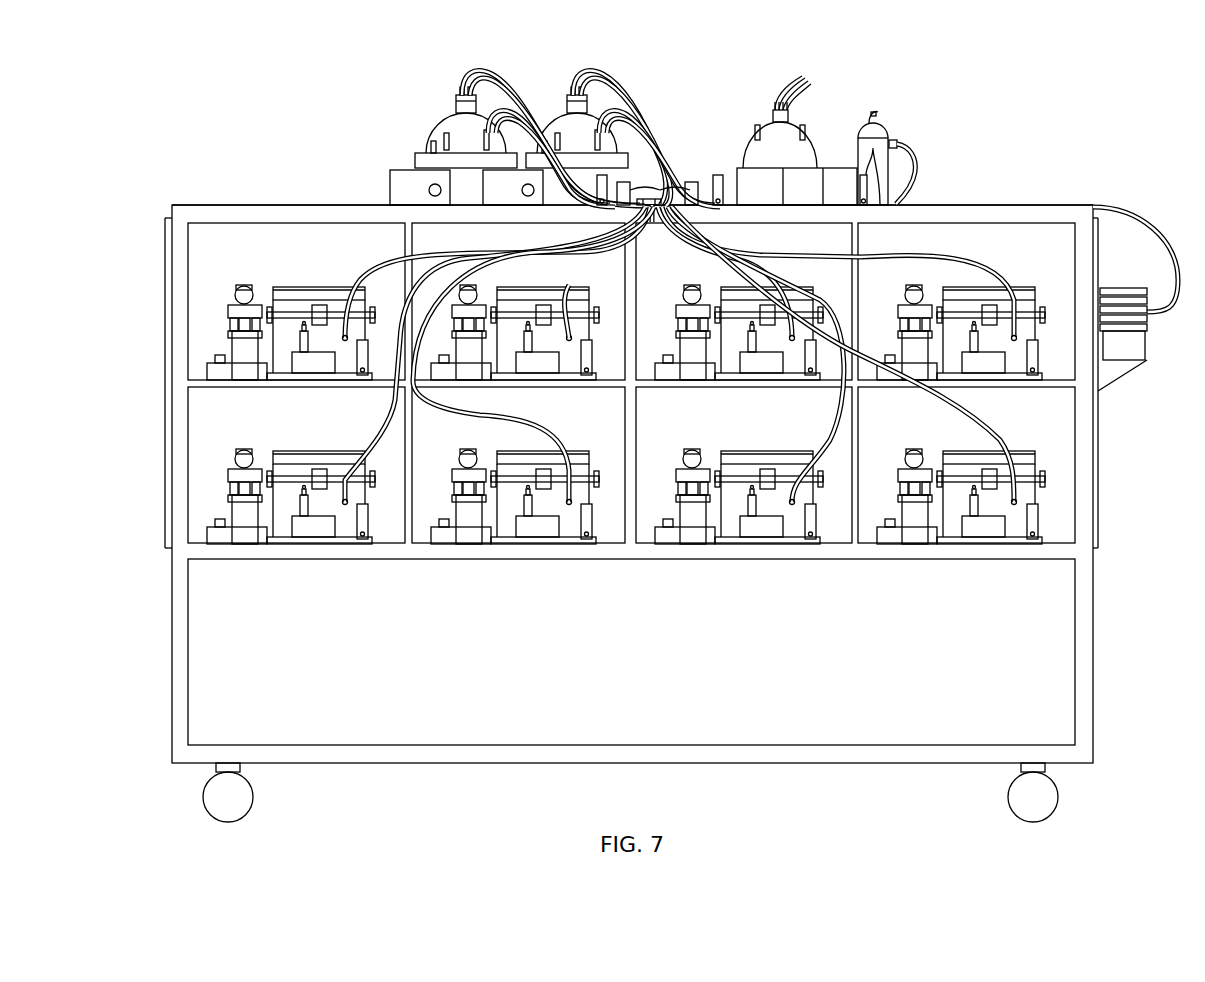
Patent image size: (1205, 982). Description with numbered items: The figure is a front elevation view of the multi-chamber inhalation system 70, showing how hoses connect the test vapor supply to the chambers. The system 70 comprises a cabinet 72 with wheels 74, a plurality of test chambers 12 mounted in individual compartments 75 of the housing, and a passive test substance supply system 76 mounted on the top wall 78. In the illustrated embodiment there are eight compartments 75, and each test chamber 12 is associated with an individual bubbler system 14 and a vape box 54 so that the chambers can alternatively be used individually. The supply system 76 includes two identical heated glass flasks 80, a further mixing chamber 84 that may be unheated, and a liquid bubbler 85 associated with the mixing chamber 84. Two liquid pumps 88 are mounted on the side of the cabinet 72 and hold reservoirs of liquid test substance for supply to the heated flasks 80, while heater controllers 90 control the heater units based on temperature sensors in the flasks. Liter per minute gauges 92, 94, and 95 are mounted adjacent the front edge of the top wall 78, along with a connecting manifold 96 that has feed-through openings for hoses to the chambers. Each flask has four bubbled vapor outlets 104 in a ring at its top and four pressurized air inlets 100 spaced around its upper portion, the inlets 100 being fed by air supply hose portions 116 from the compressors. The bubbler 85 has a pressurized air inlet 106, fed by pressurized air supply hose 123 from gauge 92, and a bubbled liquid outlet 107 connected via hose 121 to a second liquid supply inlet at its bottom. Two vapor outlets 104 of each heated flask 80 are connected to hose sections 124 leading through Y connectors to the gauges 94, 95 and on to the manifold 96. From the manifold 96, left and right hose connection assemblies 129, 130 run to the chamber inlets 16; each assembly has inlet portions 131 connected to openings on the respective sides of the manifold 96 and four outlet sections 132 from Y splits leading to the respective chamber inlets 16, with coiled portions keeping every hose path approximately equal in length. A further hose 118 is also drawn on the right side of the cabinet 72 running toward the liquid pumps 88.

The test chamber 12 is at (290, 284).
The bubbler system 14 is at (224, 334).
The chamber inlet 16 is at (362, 375).
The vape box 54 is at (318, 360).
The multi-chamber inhalation system 70 is at (1112, 418).
The cabinet 72 is at (1086, 614).
The wheels 74 is at (238, 800).
The compartment 75 is at (202, 259).
The passive test substance supply system 76 is at (698, 118).
The top wall 78 is at (296, 203).
The heated glass flask 80 is at (442, 142).
The mixing chamber 84 is at (806, 153).
The liquid bubbler 85 is at (877, 124).
The liquid pump 88 is at (1118, 288).
The heater controller 90 is at (398, 186).
The liter per minute gauge 92 is at (868, 208).
The liter per minute gauge 94 is at (718, 175).
The liter per minute gauge 95 is at (601, 208).
The connecting manifold 96 is at (681, 190).
The pressurized air inlet 100 is at (795, 126).
The bubbled vapor outlet 104 is at (800, 77).
The pressurized air inlet 106 is at (880, 118).
The bubbled liquid outlet 107 is at (899, 144).
The air supply hose portion 116 is at (498, 110).
The tube 118 is at (1133, 211).
The hose 121 is at (909, 178).
The pressurized air supply hose 123 is at (902, 166).
The hose section 124 is at (470, 72).
The left hose connection assembly 129 is at (492, 252).
The right hose connection assembly 130 is at (762, 252).
The inlet portion 131 is at (657, 225).
The outlet section 132 is at (398, 256).